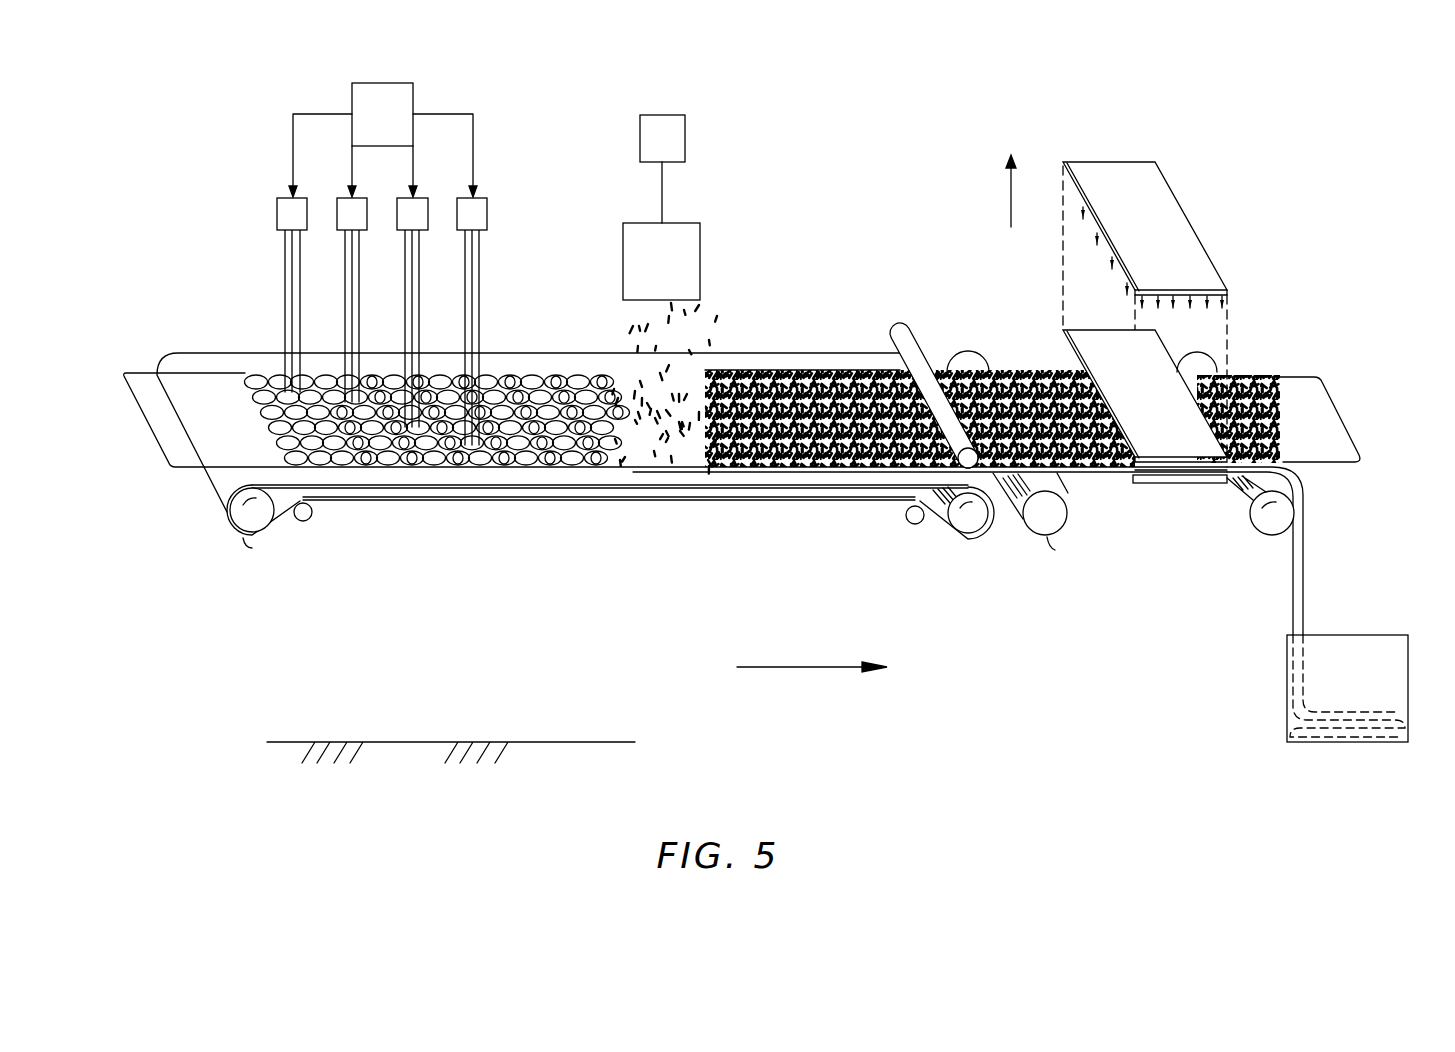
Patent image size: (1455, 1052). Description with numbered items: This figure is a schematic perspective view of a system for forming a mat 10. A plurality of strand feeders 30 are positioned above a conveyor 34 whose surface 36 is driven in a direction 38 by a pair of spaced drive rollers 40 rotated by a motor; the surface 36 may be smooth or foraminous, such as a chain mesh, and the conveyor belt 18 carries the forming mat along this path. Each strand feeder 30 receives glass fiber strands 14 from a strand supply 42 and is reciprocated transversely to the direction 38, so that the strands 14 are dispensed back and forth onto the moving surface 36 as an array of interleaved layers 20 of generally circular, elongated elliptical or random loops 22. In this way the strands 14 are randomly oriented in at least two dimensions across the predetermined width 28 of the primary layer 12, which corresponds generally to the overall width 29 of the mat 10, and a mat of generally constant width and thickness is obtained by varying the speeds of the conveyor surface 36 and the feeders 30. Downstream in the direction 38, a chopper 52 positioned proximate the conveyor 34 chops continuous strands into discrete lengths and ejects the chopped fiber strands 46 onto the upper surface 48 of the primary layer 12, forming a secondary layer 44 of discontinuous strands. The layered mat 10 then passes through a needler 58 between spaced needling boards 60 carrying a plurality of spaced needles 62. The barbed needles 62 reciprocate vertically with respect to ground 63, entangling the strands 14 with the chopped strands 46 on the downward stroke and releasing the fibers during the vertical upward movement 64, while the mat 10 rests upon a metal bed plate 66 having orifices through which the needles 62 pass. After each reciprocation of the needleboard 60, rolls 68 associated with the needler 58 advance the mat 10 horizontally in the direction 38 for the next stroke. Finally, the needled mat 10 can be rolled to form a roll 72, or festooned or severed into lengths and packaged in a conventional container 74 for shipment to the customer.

The mat 10 is at (1237, 360).
The primary layer 12 is at (493, 372).
The glass fiber strands 14 is at (477, 147).
The conveyor belt 18 is at (238, 360).
The interleaved layers 20 is at (370, 465).
The loops 22 is at (517, 465).
The width of the primary layer 28 is at (143, 420).
The overall width of the mat 29 is at (1347, 417).
The strand feeders 30 is at (278, 202).
The conveyor 34 is at (845, 358).
The conveyor surface 36 is at (830, 363).
The direction of conveyor motion 38 is at (798, 668).
The drive rollers 40 is at (977, 537).
The strand supply 42 is at (380, 82).
The secondary layer 44 is at (847, 473).
The chopped fiber strands 46 is at (717, 377).
The upper surface of the primary layer 48 is at (598, 468).
The chopper 52 is at (700, 245).
The needler 58 is at (1220, 485).
The needling boards 60 is at (1063, 340).
The needles 62 is at (1222, 308).
The ground 63 is at (312, 740).
The vertical upward movement 64 is at (1010, 197).
The bed plate 66 is at (1150, 483).
The rolls 68 is at (1273, 538).
The roll 72 is at (1258, 427).
The container 74 is at (1410, 653).